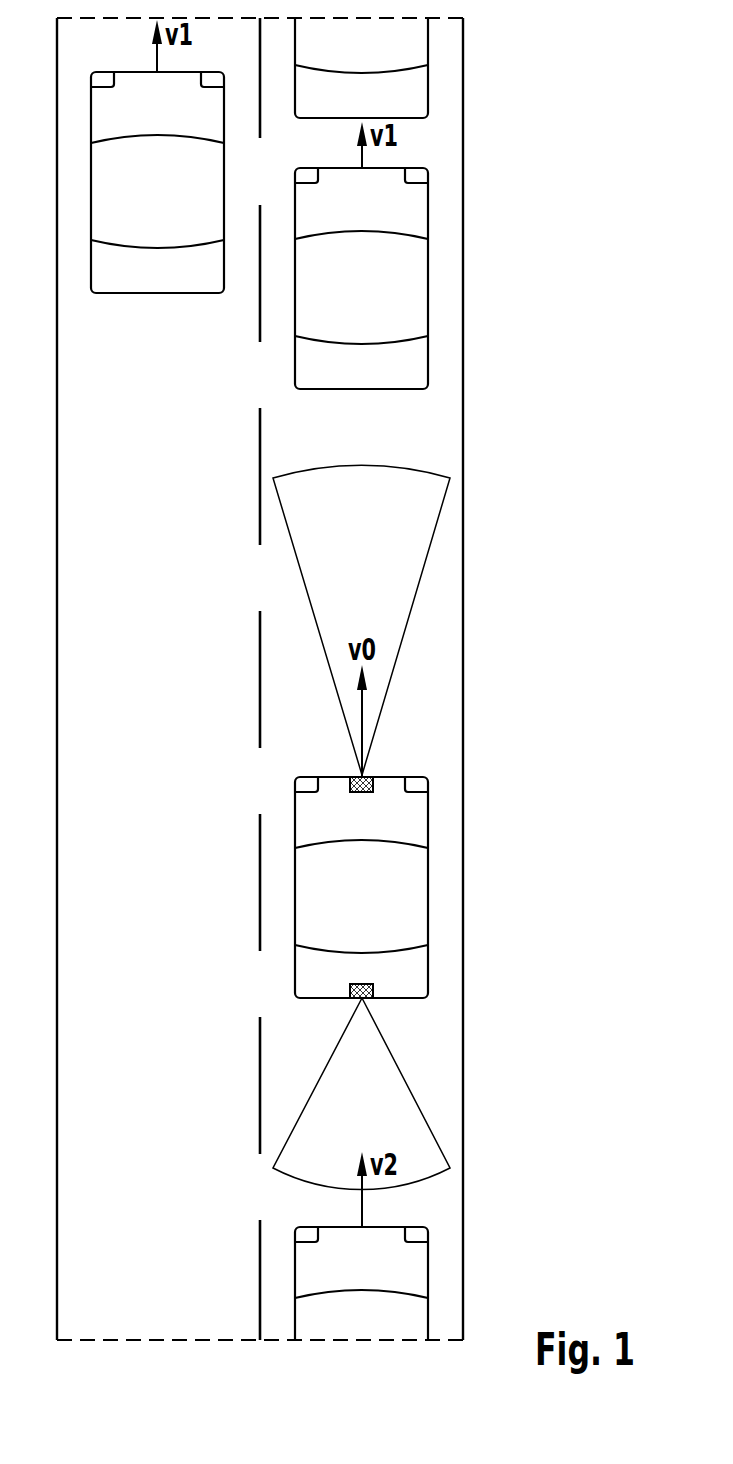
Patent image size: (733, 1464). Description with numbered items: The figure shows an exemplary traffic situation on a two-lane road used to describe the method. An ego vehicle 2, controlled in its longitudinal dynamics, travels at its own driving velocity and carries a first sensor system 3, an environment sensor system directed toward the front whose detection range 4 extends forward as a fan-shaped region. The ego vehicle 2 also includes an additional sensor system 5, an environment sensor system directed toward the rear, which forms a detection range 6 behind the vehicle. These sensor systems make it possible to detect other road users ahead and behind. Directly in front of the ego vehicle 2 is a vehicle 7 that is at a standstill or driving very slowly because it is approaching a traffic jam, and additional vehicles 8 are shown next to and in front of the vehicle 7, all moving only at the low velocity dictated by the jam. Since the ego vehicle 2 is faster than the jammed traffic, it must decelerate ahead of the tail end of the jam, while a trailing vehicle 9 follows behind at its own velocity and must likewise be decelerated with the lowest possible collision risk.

The ego vehicle 2 is at (428, 886).
The first sensor system 3 is at (357, 778).
The detection range 4 is at (433, 538).
The additional sensor system 5 is at (360, 998).
The detection range 6 is at (429, 1125).
The vehicle in front 7 is at (428, 278).
The additional vehicles 8 is at (91, 183).
The trailing vehicle 9 is at (428, 1270).